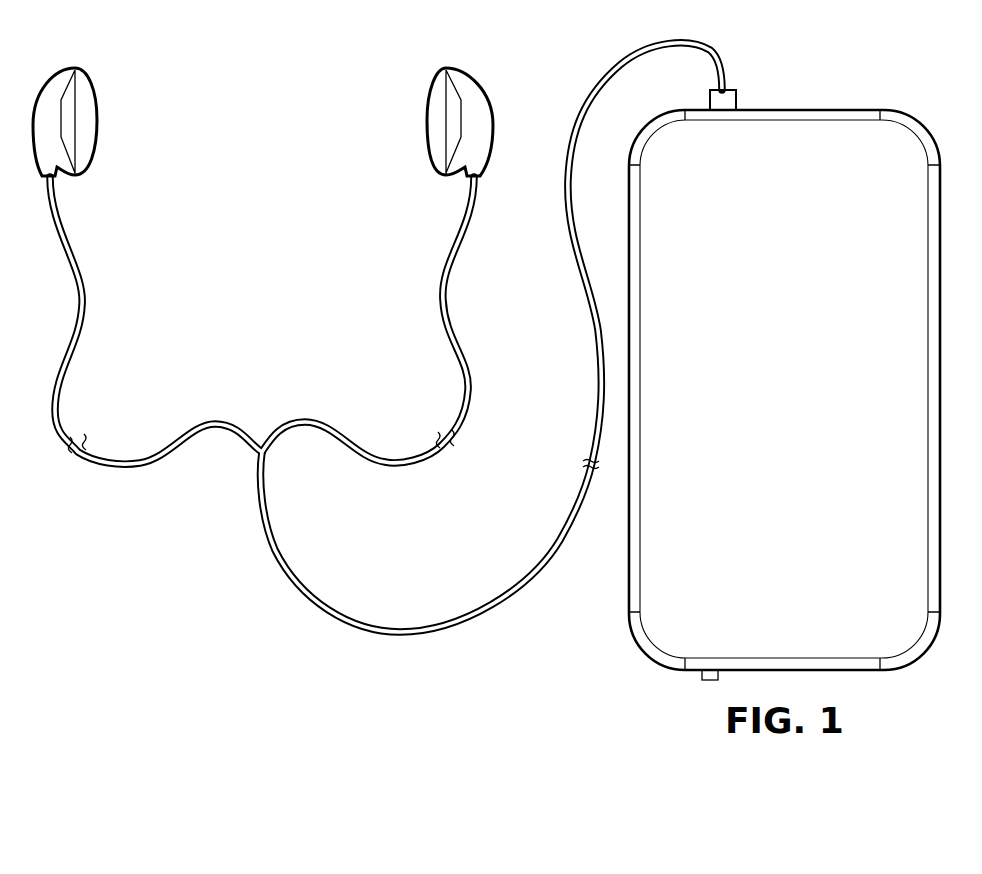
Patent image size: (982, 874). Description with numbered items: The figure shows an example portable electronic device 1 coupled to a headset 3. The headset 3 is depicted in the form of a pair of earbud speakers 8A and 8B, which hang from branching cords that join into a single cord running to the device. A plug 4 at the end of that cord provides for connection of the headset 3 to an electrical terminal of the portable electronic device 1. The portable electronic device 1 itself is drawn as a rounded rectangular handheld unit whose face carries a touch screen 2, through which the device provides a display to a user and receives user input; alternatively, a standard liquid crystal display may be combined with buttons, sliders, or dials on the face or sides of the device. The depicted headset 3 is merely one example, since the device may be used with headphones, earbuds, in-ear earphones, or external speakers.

The portable electronic device 1 is at (876, 100).
The touch screen 2 is at (794, 401).
The headset 3 is at (213, 422).
The plug 4 is at (738, 98).
The earbud speaker 8A is at (460, 68).
The earbud speaker 8B is at (62, 68).